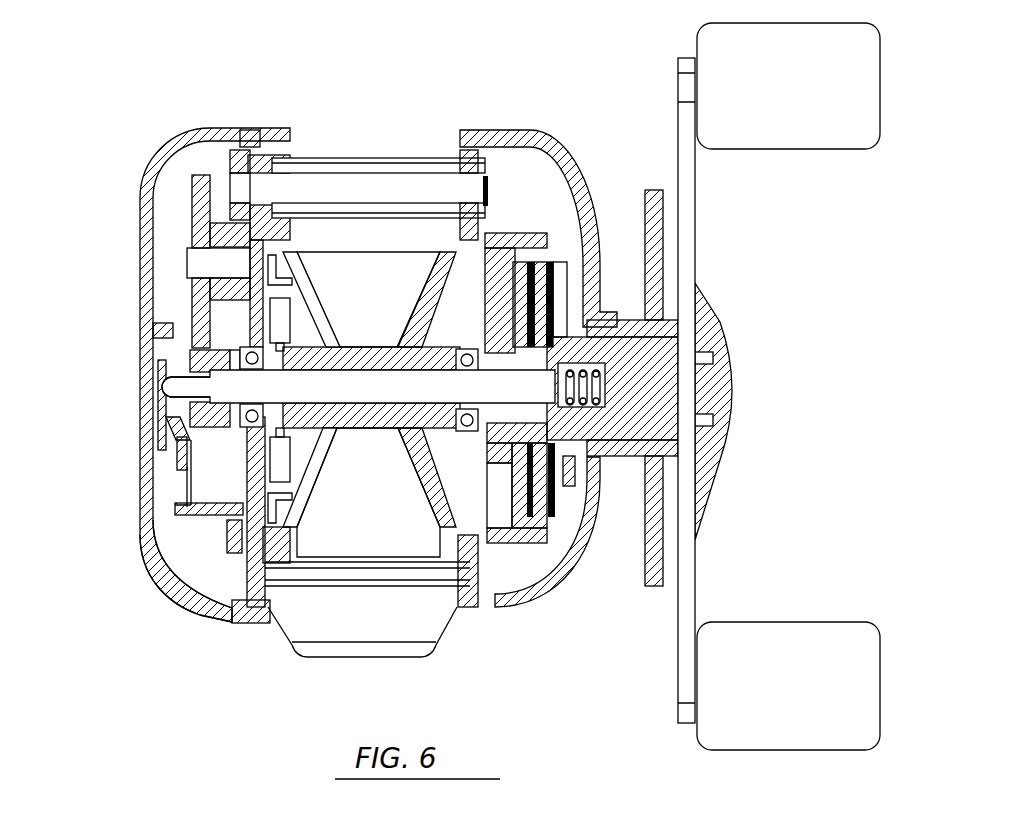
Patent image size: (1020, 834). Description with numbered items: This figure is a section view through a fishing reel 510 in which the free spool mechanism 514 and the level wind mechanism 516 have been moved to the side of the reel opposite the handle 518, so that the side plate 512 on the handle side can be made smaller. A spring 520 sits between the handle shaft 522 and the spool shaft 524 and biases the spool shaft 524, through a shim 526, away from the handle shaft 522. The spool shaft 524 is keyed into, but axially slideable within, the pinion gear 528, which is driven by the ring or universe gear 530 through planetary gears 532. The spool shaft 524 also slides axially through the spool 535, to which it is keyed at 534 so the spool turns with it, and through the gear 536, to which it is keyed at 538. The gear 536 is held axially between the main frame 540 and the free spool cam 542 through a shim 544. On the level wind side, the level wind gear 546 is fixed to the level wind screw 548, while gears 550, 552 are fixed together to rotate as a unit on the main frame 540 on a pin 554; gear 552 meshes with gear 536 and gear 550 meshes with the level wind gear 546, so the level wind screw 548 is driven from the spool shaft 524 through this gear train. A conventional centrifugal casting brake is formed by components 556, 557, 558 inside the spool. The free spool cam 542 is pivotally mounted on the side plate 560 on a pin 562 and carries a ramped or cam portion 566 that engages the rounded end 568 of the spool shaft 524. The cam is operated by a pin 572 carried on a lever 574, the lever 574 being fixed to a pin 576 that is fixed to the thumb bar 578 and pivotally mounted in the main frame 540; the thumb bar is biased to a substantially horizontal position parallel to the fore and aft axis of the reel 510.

The reel 510 is at (247, 667).
The side plate 512 is at (577, 555).
The free spool mechanism 514 is at (187, 573).
The level wind mechanism 516 is at (180, 198).
The handle 518 is at (683, 223).
The spring 520 is at (597, 452).
The handle shaft 522 is at (705, 392).
The spool shaft 524 is at (397, 397).
The shim 526 is at (570, 458).
The pinion gear 528 is at (497, 373).
The ring gear 530 is at (530, 535).
The planetary gears 532 is at (491, 280).
The key 534 is at (430, 340).
The spool 535 is at (333, 420).
The gear 536 is at (180, 463).
The key 538 is at (227, 428).
The main frame 540 is at (276, 547).
The free spool cam 542 is at (207, 515).
The shim 544 is at (162, 415).
The level wind gear 546 is at (244, 160).
The level wind screw 548 is at (365, 183).
The gear 550 is at (249, 212).
The gear 552 is at (193, 297).
The pin 554 is at (187, 260).
The centrifugal casting brake component 556 is at (290, 338).
The centrifugal casting brake component 557 is at (283, 316).
The centrifugal casting brake component 558 is at (295, 496).
The side plate 560 is at (150, 543).
The pin 562 is at (170, 482).
The ramped or cam portion 566 is at (175, 437).
The rounded end 568 is at (163, 384).
The pin 572 is at (233, 530).
The lever 574 is at (237, 601).
The pin 576 is at (357, 589).
The thumb bar 578 is at (422, 631).